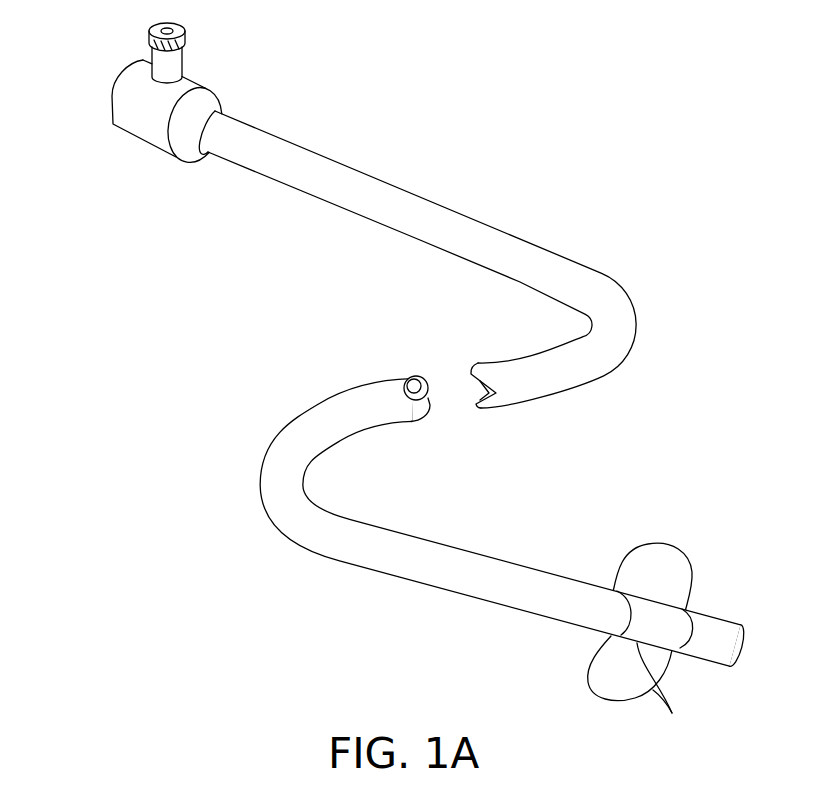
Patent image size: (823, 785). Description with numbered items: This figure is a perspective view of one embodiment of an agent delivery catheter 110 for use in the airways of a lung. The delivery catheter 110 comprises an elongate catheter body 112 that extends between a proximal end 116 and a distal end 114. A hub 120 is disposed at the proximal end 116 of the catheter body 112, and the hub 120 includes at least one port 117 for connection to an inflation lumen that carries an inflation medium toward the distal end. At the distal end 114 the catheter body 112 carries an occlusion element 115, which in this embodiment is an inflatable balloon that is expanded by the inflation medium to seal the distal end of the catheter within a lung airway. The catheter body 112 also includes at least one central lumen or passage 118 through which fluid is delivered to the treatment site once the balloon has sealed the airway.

The delivery catheter 110 is at (543, 175).
The elongate catheter body 112 is at (368, 205).
The distal end 114 is at (718, 617).
The occlusion element 115 is at (672, 713).
The proximal end 116 is at (216, 106).
The port 117 is at (184, 69).
The central lumen 118 is at (480, 407).
The hub 120 is at (129, 122).